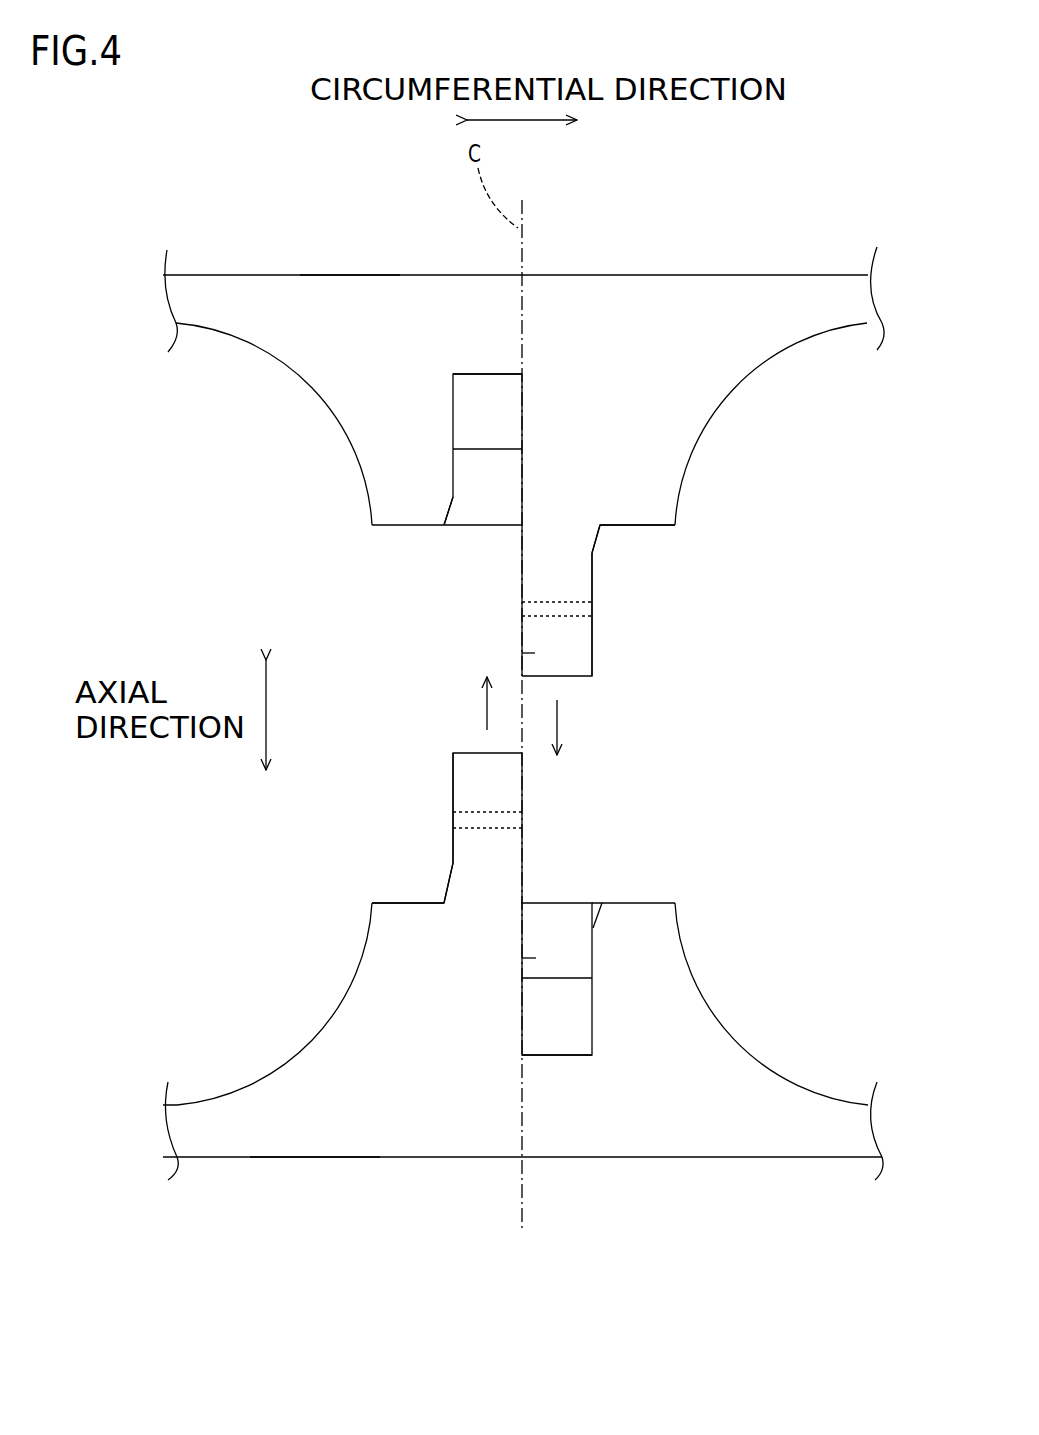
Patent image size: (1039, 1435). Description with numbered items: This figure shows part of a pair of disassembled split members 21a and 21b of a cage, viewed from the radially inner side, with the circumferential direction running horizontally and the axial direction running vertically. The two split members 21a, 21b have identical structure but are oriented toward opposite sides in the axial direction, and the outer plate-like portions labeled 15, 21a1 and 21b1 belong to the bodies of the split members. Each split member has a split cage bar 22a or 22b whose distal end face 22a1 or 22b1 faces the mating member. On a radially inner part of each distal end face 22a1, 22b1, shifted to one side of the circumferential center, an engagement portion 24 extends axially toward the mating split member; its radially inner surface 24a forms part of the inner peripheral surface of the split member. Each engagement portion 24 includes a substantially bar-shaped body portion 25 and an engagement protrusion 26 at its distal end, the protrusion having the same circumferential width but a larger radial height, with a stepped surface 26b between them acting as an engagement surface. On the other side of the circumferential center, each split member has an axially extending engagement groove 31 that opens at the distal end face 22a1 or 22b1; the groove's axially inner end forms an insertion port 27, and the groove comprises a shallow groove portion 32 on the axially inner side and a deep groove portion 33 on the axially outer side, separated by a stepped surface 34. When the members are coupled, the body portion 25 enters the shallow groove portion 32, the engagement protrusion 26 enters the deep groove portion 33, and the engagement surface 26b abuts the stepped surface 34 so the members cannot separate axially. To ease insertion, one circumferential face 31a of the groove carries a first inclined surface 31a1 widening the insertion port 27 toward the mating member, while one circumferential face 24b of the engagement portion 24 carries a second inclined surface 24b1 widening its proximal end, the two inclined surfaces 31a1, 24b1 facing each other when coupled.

The annular plate member 15 is at (212, 297).
The split member 21a is at (762, 1188).
The first side wall end surface 21a1 is at (294, 1160).
The split member 21b is at (764, 242).
The second side wall end surface 21b1 is at (325, 272).
The split cage bar 22a is at (655, 921).
The distal end face 22a1 is at (647, 901).
The split cage bar 22b is at (665, 471).
The distal end face 22b1 is at (397, 528).
The engagement portion 24 is at (440, 742).
The radially inner surface 24a is at (580, 574).
The circumferential face 24b is at (593, 653).
The second inclined surface 24b1 is at (598, 538).
The body portion 25 is at (522, 586).
The engagement protrusion 26 is at (535, 654).
The stepped surface 26b is at (587, 594).
The insertion port 27 is at (487, 505).
The engagement groove 31 is at (474, 474).
The circumferential face 31a is at (453, 458).
The first inclined surface 31a1 is at (450, 500).
The shallow groove portion 32 is at (508, 471).
The deep groove portion 33 is at (508, 404).
The stepped surface 34 is at (527, 421).